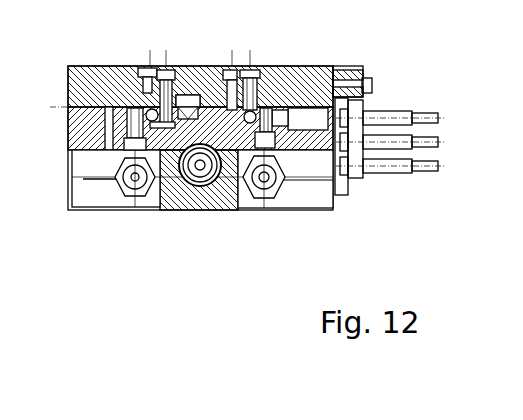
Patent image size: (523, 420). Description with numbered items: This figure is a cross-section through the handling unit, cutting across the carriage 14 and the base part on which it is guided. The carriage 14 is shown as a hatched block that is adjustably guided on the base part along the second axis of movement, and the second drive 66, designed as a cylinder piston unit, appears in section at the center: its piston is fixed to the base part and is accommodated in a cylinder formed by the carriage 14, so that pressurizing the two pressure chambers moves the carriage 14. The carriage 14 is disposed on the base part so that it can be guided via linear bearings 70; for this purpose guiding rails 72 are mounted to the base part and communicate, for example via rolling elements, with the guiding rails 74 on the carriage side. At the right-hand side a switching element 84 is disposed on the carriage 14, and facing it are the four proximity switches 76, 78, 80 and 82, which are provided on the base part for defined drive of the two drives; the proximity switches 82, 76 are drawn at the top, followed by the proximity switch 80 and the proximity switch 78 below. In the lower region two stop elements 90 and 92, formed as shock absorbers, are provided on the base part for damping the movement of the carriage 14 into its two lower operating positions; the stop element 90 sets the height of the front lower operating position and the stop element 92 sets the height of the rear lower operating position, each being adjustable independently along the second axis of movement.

The carriage 14 is at (226, 185).
The second drive 66 is at (196, 186).
The linear bearings 70 is at (140, 120).
The guiding rails 72 is at (243, 118).
The guiding rails 74 is at (143, 127).
The proximity switch 76 is at (430, 113).
The proximity switch 78 is at (431, 172).
The proximity switch 80 is at (437, 141).
The proximity switch 82 is at (392, 92).
The switching element 84 is at (339, 158).
The stop element 90 is at (133, 186).
The stop element 92 is at (270, 192).